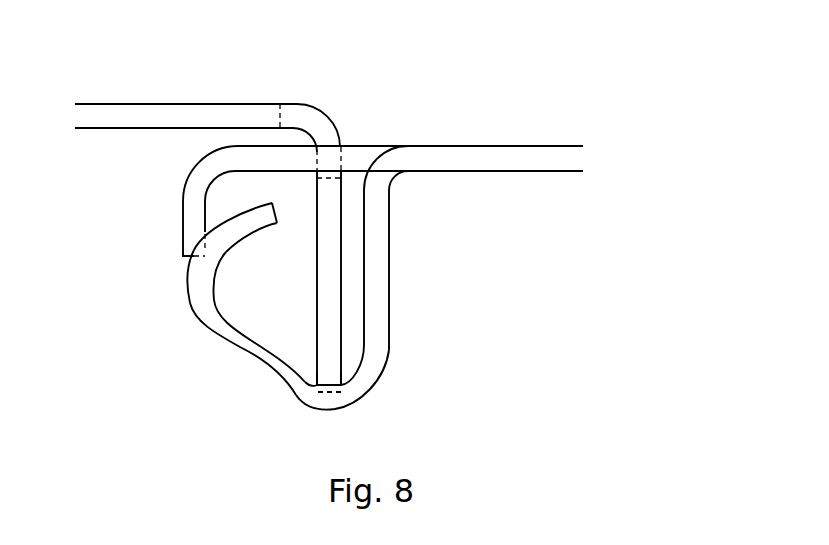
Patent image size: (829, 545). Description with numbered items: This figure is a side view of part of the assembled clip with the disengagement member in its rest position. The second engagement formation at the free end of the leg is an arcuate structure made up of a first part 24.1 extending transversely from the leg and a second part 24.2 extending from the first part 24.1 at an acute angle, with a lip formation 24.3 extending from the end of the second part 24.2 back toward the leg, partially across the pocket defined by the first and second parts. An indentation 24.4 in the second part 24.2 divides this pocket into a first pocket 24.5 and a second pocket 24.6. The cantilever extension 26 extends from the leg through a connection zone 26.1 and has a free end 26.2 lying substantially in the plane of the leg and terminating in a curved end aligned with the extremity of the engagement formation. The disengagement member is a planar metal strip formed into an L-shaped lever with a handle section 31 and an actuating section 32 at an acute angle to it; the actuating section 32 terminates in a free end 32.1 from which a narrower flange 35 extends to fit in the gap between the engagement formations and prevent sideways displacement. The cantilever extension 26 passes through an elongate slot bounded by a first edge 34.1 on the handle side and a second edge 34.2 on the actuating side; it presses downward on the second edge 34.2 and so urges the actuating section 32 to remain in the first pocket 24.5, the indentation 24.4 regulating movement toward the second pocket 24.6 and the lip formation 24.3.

The first part 24.1 is at (378, 317).
The second part 24.2 is at (305, 392).
The lip formation 24.3 is at (247, 219).
The indentation 24.4 is at (260, 347).
The first pocket 24.5 is at (355, 347).
The second pocket 24.6 is at (252, 273).
The cantilever extension 26 is at (285, 162).
The connection zone 26.1 is at (535, 157).
The free end 26.2 is at (203, 177).
The handle section 31 is at (190, 113).
The actuating section 32 is at (330, 270).
The free end 32.1 is at (325, 375).
The first edge 34.1 is at (280, 115).
The second edge 34.2 is at (330, 178).
The flange 35 is at (325, 393).